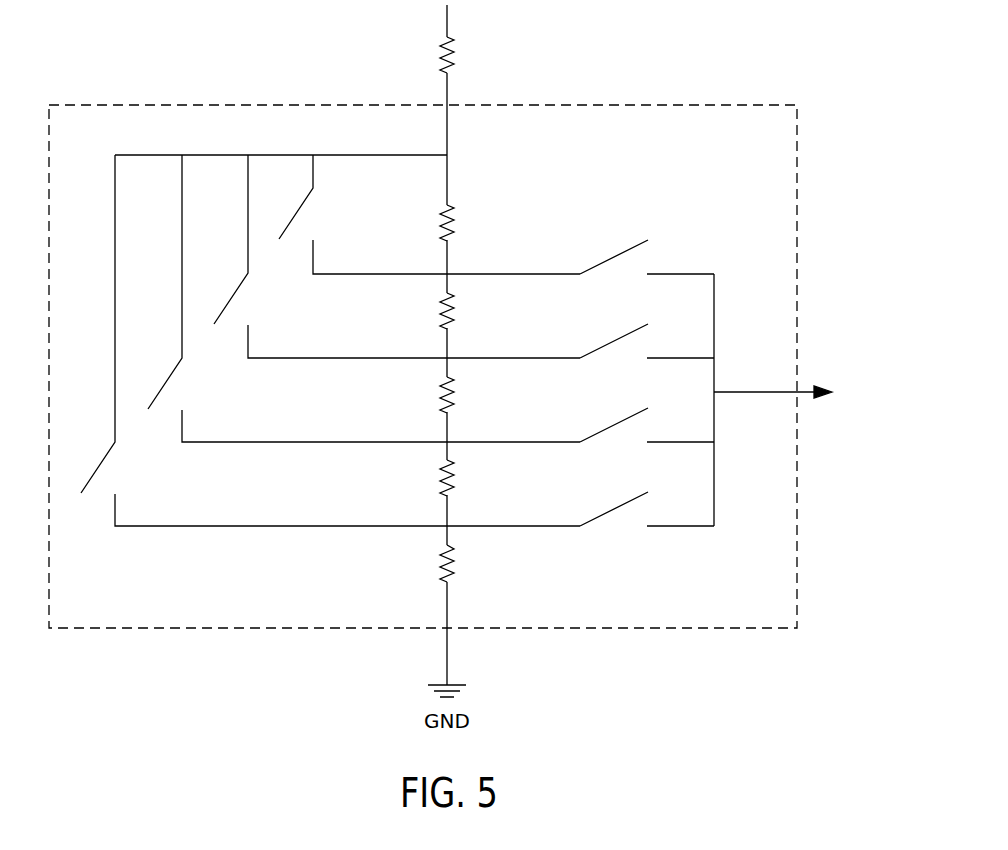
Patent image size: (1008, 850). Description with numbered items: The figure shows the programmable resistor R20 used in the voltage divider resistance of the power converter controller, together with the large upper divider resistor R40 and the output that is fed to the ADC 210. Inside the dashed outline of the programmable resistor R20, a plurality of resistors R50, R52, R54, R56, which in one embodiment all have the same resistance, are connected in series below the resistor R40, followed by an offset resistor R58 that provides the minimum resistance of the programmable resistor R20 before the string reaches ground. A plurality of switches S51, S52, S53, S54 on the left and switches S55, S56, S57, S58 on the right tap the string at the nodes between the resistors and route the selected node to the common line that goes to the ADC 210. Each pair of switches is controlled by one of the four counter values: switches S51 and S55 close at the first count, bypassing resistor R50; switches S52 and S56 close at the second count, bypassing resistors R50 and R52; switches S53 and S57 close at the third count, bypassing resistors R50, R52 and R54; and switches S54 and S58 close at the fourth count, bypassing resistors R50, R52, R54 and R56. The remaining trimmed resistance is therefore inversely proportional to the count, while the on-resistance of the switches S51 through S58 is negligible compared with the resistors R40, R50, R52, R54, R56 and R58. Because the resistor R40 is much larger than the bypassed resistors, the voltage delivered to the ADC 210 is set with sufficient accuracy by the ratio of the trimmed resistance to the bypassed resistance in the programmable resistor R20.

The programmable resistor R20 is at (635, 104).
The resistor R40 is at (472, 55).
The resistor R50 is at (487, 223).
The resistor R52 is at (487, 311).
The resistor R54 is at (487, 395).
The resistor R56 is at (487, 478).
The offset resistor R58 is at (473, 563).
The switch S51 is at (298, 212).
The switch S52 is at (232, 297).
The switch S53 is at (166, 381).
The switch S54 is at (100, 465).
The switch S55 is at (641, 245).
The switch S56 is at (641, 329).
The switch S57 is at (641, 413).
The switch S58 is at (641, 497).
The ADC 210 is at (803, 389).